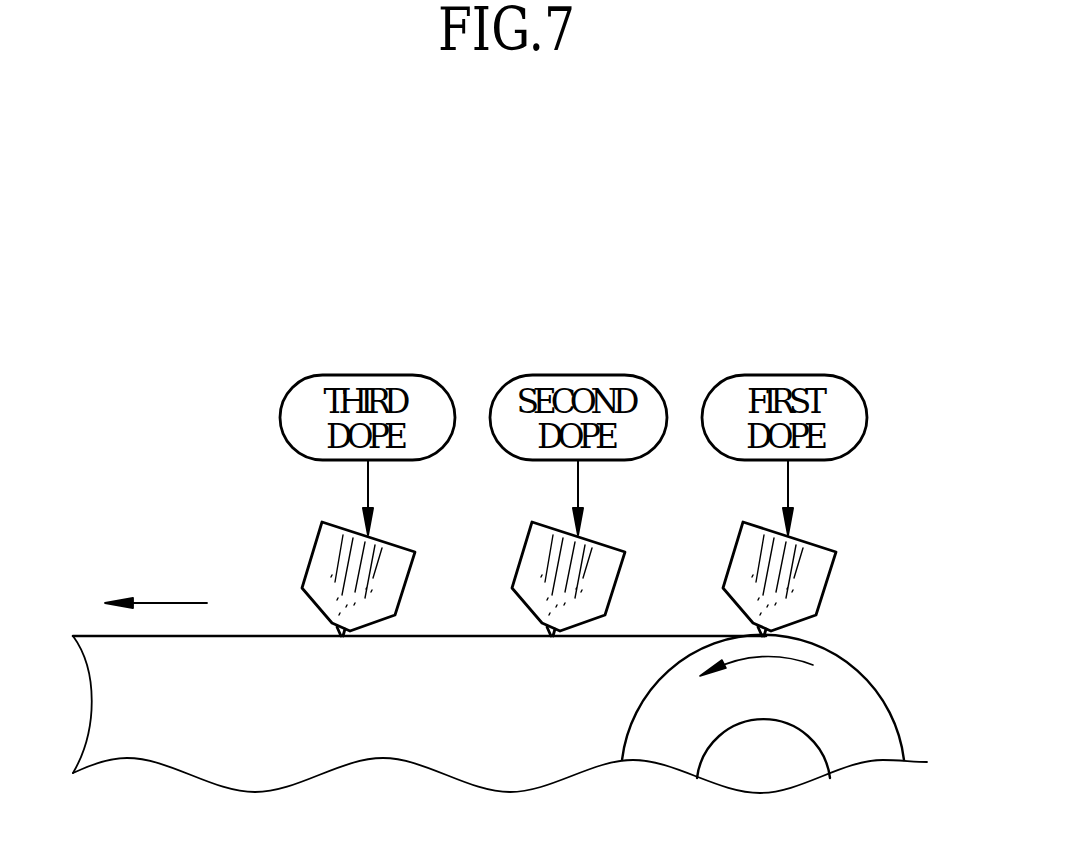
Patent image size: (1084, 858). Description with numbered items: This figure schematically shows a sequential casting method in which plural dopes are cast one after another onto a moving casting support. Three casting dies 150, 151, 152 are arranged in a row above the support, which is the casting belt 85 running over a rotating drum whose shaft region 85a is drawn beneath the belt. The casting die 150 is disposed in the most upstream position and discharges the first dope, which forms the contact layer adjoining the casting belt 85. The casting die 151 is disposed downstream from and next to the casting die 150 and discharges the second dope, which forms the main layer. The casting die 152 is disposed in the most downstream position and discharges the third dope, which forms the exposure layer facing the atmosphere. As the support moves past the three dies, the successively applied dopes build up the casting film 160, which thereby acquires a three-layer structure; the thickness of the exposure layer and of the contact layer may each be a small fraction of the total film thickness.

The casting belt 85 is at (850, 667).
The drum shaft 85a is at (863, 743).
The casting die 150 is at (812, 577).
The casting die 151 is at (585, 573).
The casting die 152 is at (375, 573).
The casting film 160 is at (186, 632).